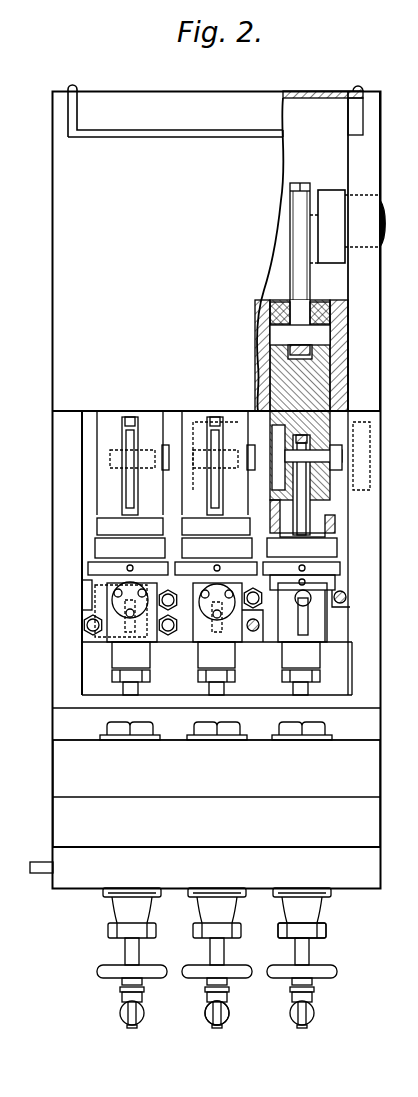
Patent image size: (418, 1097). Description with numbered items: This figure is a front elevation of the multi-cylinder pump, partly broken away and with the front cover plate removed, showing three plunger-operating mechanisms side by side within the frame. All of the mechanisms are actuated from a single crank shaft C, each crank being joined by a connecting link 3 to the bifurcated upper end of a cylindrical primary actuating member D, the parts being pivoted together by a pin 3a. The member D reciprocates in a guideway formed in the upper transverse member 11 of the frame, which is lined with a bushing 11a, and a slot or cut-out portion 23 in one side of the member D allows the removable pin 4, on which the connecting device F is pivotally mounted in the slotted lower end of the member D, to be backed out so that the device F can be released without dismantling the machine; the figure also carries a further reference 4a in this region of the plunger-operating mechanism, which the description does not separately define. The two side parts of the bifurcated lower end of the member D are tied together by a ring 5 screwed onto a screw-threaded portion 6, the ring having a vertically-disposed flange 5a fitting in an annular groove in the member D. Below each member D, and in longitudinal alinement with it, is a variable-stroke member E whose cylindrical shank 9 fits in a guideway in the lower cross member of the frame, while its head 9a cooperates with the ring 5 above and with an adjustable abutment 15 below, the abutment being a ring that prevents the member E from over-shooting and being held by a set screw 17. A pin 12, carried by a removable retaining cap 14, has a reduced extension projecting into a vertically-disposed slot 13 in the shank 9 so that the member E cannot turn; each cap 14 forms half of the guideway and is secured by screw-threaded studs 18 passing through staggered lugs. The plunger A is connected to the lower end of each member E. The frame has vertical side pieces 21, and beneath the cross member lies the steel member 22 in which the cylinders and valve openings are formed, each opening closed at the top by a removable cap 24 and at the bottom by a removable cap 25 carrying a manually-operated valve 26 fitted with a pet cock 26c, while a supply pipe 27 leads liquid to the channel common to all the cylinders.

The connecting link 3 is at (290, 282).
The pin 3a is at (275, 340).
The removable pin 4 is at (340, 450).
The plunger 4a is at (123, 435).
The ring 5 is at (335, 525).
The vertically-disposed flange 5a is at (330, 505).
The screw-threaded portion 6 is at (100, 524).
The cylindrical shank 9 is at (112, 658).
The head 9a is at (100, 548).
The transverse member 11 is at (258, 373).
The bushing 11a is at (265, 318).
The pin 12 is at (230, 607).
The vertically-disposed slot 13 is at (308, 623).
The retaining cap 14 is at (147, 630).
The adjustable abutment 15 is at (335, 570).
The set screw 17 is at (330, 583).
The screw-threaded stud 18 is at (340, 604).
The vertical side piece 21 is at (365, 281).
The steel member 22 is at (216, 793).
The slot 23 is at (270, 430).
The removable cap 24 is at (236, 732).
The removable cap 25 is at (326, 928).
The manually-operated valve 26 is at (218, 948).
The pet cock 26c is at (262, 1025).
The supply pipe 27 is at (45, 873).
The plunger A is at (202, 687).
The crank shaft C is at (386, 232).
The primary actuating member D is at (316, 378).
The variable-stroke member E is at (228, 658).
The connecting device F is at (122, 488).